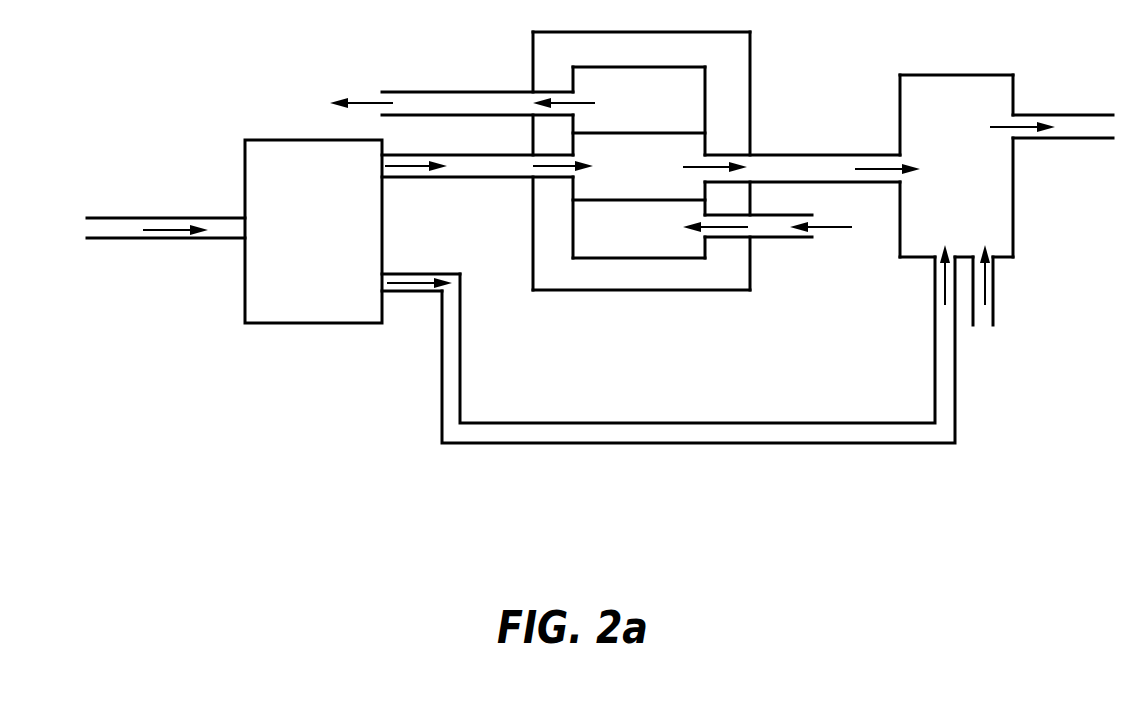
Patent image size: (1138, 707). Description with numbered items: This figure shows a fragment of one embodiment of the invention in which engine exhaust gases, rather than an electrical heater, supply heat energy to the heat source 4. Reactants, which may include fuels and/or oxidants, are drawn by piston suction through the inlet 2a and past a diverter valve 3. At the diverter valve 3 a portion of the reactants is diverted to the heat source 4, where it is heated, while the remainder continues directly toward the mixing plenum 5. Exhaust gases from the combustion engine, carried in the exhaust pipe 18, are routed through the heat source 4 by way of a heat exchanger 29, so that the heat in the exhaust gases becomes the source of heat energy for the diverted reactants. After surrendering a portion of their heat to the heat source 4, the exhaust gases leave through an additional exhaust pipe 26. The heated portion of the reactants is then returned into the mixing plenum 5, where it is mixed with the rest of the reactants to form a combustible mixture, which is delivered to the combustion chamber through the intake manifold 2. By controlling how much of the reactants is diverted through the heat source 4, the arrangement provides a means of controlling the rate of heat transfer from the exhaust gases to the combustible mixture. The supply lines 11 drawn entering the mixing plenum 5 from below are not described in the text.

The inlet 2a is at (135, 213).
The diverter valve 3 is at (310, 328).
The additional exhaust pipe 26 is at (465, 85).
The heat source 4 is at (657, 298).
The heat exchanger 29 is at (567, 227).
The exhaust pipe 18 is at (788, 245).
The mixing plenum 5 is at (956, 166).
The intake manifold 2 is at (1062, 145).
The supply lines 11 is at (995, 295).